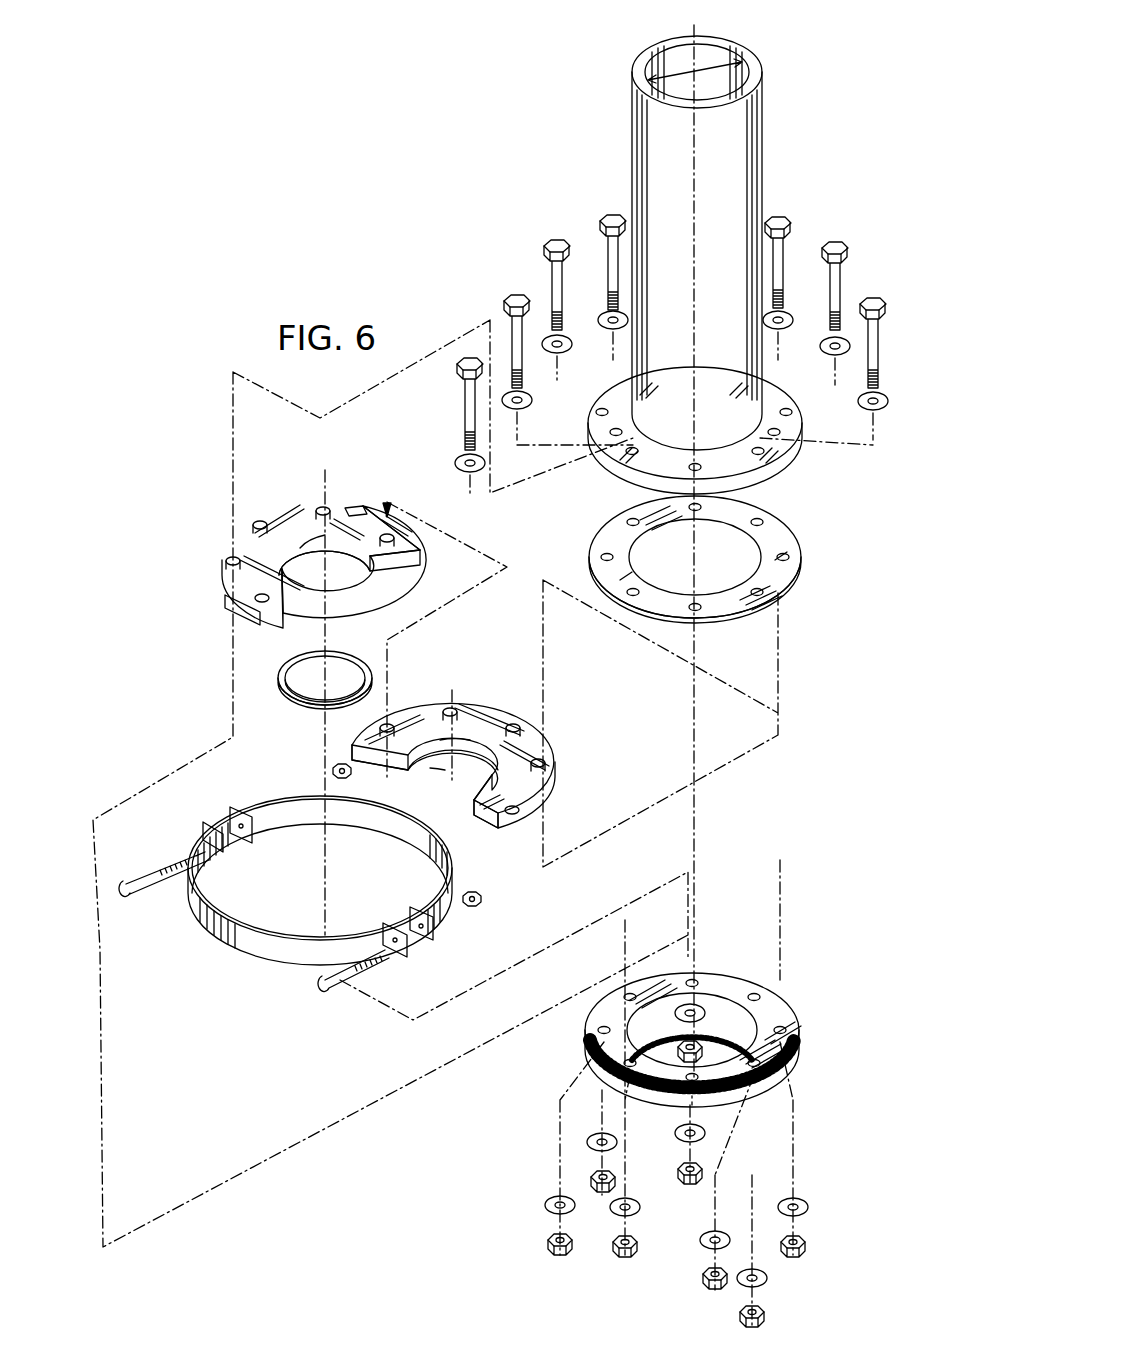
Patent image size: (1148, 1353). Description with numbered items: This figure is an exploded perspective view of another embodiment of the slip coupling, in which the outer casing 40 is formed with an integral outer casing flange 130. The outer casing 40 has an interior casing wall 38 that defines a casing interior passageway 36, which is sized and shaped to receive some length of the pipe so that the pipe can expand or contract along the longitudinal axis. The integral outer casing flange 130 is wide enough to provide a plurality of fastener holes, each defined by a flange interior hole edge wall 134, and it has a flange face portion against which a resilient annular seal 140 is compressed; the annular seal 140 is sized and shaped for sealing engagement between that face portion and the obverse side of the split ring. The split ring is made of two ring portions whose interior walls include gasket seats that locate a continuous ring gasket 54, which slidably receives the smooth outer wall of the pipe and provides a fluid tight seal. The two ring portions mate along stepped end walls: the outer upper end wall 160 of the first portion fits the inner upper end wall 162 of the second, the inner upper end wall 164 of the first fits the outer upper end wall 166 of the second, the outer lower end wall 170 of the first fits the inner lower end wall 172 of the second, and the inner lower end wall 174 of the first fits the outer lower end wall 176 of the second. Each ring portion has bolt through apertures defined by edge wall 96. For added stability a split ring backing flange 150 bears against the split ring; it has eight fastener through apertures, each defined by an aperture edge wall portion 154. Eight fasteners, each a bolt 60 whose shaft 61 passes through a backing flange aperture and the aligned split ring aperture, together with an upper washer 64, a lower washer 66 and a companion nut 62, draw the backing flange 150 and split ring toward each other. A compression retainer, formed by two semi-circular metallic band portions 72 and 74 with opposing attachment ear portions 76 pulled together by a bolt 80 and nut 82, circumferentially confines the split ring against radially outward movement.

The casing interior passageway 36 is at (695, 71).
The interior casing wall 38 is at (718, 40).
The outer casing 40 is at (721, 227).
The bolt 60 is at (664, 323).
The bolt shaft 61 is at (610, 272).
The upper washer 64 is at (455, 464).
The integral outer casing flange 130 is at (708, 439).
The flange interior hole edge wall 134 is at (600, 413).
The resilient annular seal 140 is at (775, 583).
The aperture edge wall 96 is at (260, 520).
The outer upper end wall 160 is at (358, 768).
The inner upper end wall 162 is at (360, 505).
The inner upper end wall 164 is at (545, 795).
The outer upper end wall 166 is at (290, 612).
The outer lower end wall 170 is at (486, 830).
The inner lower end wall 172 is at (230, 605).
The inner lower end wall 174 is at (430, 780).
The outer lower end wall 176 is at (425, 560).
The gasket 54 is at (300, 705).
The semi-circular metallic band portion 72 is at (255, 960).
The semi-circular metallic band portion 74 is at (320, 899).
The attachment ear portion 76 is at (240, 808).
The bolt 80 is at (130, 895).
The nut 82 is at (330, 771).
The split ring backing flange 150 is at (688, 1019).
The aperture edge wall portion 154 is at (632, 995).
The lower washer 66 is at (700, 1018).
The nut 62 is at (702, 1049).